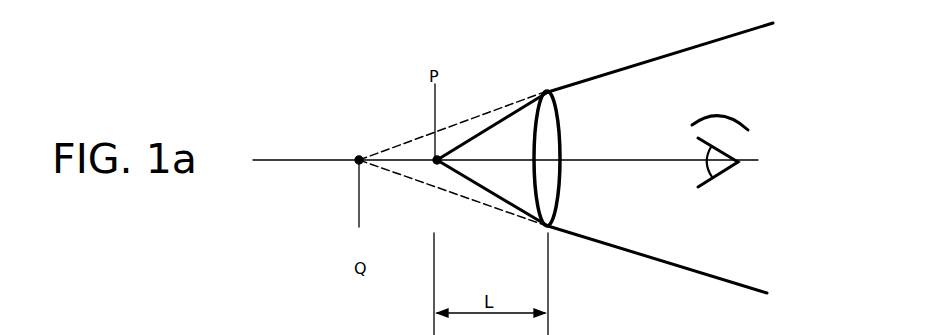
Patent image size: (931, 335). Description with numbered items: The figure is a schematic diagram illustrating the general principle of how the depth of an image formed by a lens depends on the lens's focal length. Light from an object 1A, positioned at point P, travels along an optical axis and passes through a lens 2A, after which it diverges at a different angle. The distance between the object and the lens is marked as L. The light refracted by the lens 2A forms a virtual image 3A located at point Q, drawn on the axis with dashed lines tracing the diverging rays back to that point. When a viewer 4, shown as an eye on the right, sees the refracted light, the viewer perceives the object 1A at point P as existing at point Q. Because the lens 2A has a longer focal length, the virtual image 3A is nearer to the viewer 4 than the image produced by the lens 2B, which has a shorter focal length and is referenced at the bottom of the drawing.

The object 1A is at (442, 147).
The lens 2A is at (550, 85).
The lens 2B is at (595, 334).
The virtual image 3A is at (363, 140).
The viewer 4 is at (757, 110).